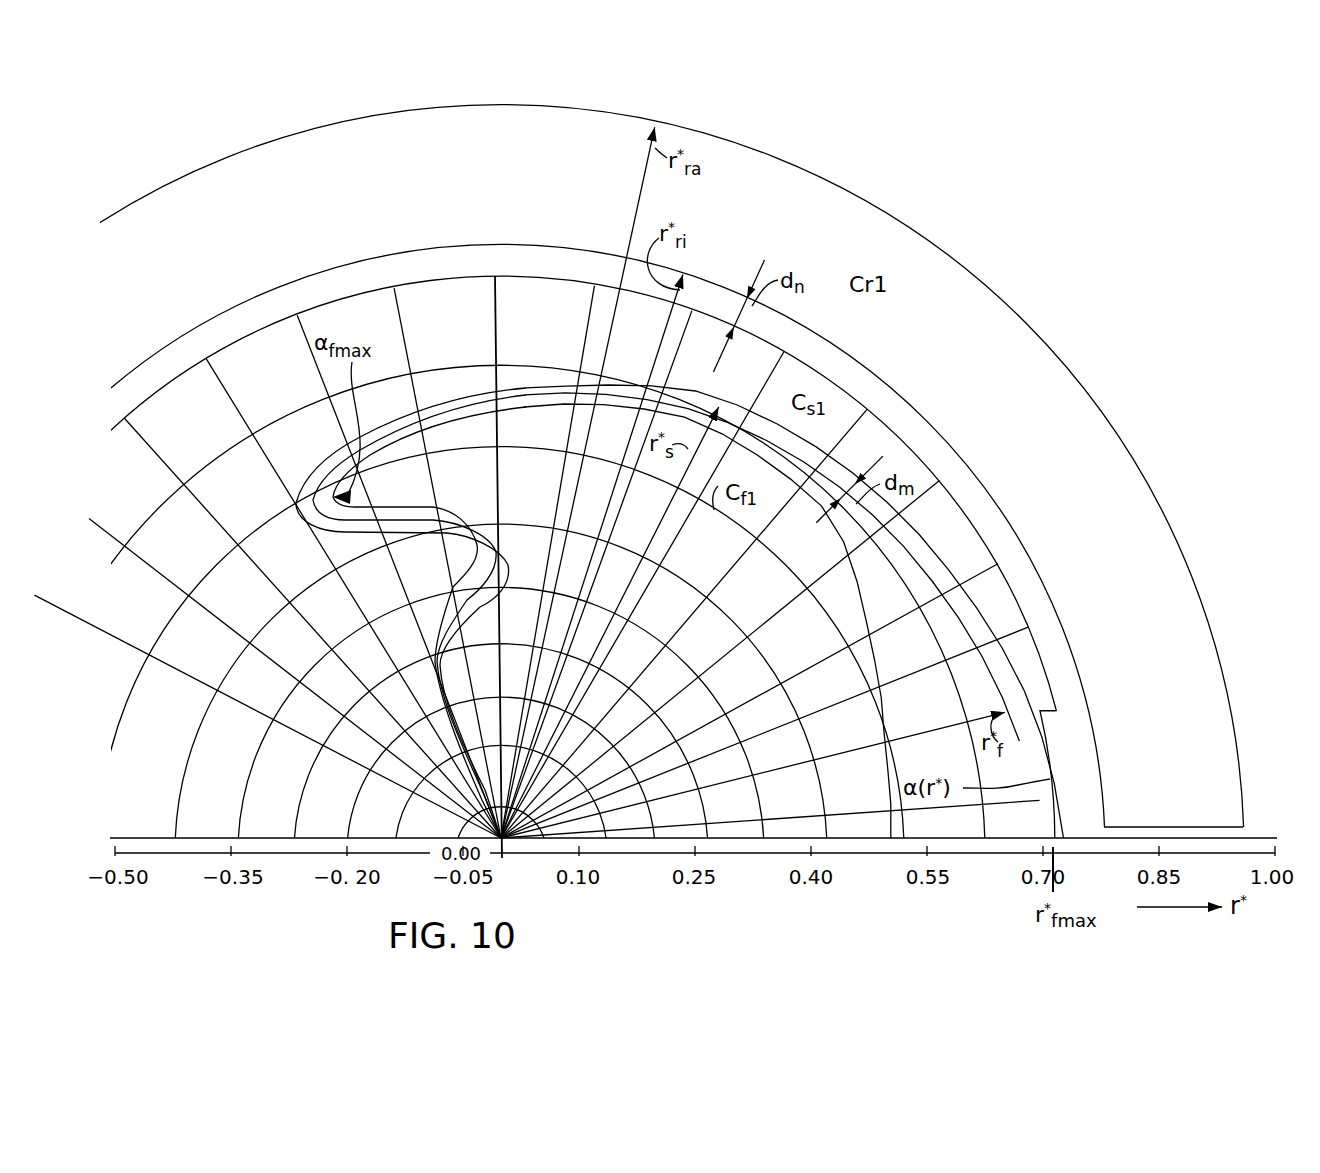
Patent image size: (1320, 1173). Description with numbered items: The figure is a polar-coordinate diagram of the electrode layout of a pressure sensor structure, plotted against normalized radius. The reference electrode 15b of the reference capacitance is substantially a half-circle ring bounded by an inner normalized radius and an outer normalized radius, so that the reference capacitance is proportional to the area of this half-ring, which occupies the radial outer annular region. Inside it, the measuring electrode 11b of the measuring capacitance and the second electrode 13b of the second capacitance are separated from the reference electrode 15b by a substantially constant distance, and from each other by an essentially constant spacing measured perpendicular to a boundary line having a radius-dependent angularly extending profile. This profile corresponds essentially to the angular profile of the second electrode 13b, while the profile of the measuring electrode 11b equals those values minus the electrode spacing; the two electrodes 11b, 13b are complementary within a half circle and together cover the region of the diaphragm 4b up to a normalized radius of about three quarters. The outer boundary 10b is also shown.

The outer rotor ring 10b is at (1110, 406).
The measuring electrode 11b is at (872, 438).
The second electrode 13b is at (908, 628).
The reference electrode 15b is at (1118, 470).
The diaphragm 4b is at (1066, 689).